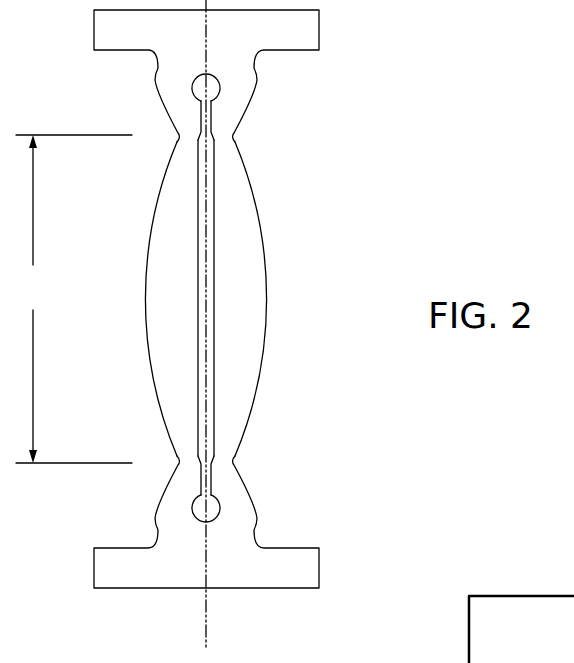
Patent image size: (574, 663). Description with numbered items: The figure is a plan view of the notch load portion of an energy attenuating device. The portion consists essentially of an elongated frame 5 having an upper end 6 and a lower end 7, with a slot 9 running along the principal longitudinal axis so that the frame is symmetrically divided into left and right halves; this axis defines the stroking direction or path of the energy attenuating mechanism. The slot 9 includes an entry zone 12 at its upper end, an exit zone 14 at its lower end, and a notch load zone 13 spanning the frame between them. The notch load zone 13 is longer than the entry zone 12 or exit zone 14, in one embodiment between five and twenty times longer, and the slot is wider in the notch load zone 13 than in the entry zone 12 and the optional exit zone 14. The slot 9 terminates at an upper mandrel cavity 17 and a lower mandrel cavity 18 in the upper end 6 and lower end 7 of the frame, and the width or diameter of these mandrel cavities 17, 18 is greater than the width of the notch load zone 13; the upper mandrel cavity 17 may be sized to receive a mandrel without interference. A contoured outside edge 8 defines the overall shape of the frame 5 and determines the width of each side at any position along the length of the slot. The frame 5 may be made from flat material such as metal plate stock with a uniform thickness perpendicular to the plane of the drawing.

The frame 5 is at (263, 299).
The upper end 6 is at (157, 79).
The lower end 7 is at (155, 517).
The contoured outside edge 8 is at (263, 347).
The slot 9 is at (213, 237).
The entry zone 12 is at (213, 114).
The notch load zone 13 is at (74, 299).
The exit zone 14 is at (213, 482).
The upper mandrel cavity 17 is at (220, 88).
The lower mandrel cavity 18 is at (220, 508).